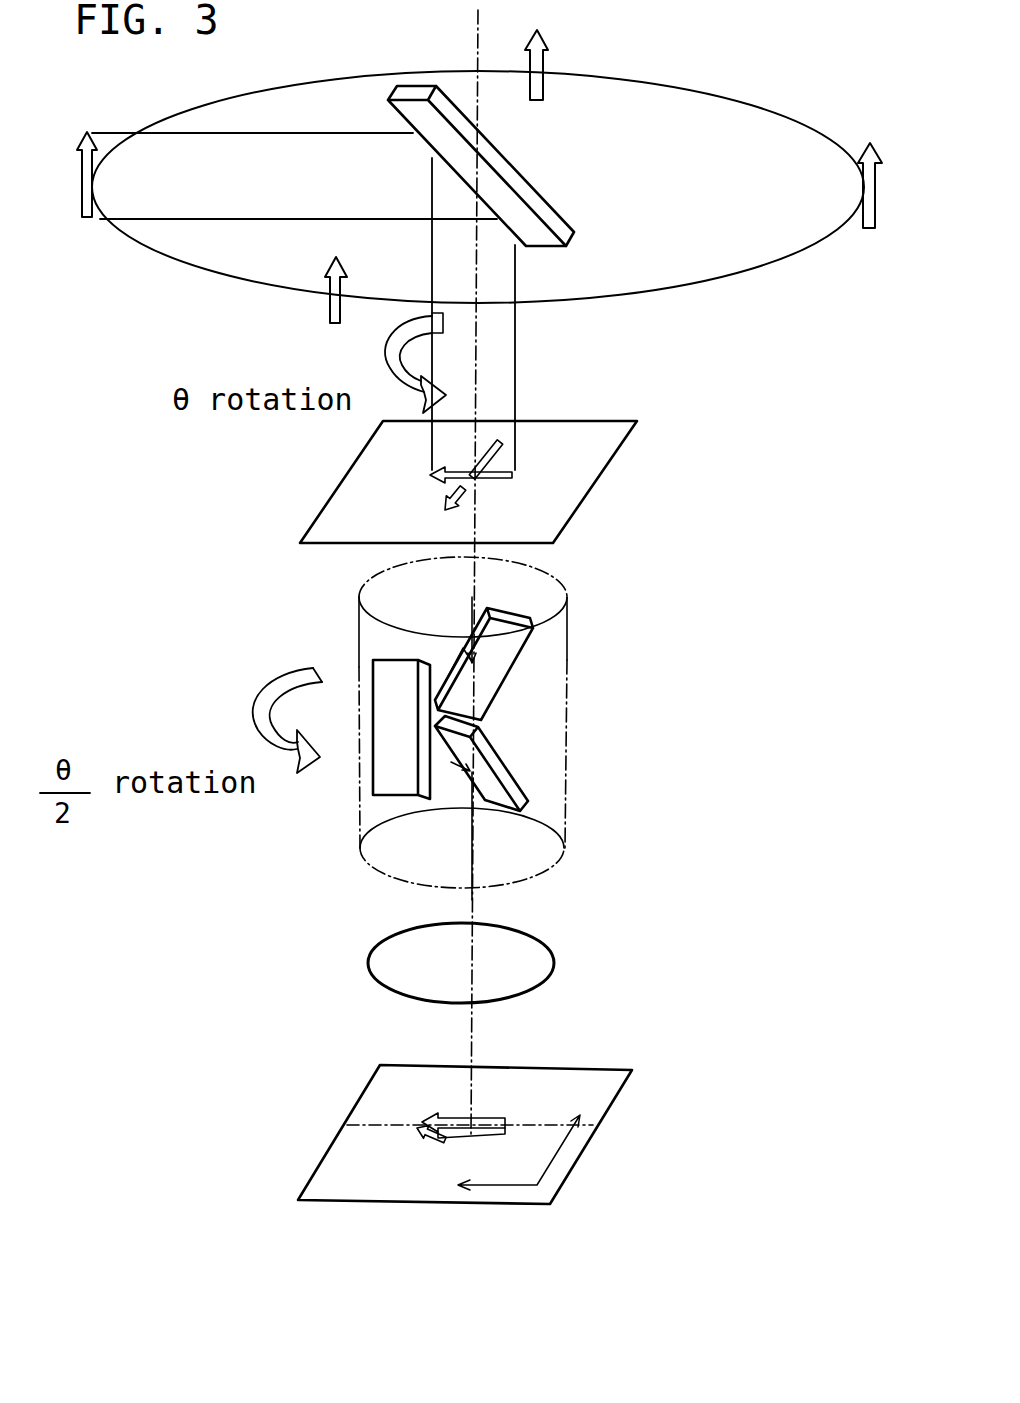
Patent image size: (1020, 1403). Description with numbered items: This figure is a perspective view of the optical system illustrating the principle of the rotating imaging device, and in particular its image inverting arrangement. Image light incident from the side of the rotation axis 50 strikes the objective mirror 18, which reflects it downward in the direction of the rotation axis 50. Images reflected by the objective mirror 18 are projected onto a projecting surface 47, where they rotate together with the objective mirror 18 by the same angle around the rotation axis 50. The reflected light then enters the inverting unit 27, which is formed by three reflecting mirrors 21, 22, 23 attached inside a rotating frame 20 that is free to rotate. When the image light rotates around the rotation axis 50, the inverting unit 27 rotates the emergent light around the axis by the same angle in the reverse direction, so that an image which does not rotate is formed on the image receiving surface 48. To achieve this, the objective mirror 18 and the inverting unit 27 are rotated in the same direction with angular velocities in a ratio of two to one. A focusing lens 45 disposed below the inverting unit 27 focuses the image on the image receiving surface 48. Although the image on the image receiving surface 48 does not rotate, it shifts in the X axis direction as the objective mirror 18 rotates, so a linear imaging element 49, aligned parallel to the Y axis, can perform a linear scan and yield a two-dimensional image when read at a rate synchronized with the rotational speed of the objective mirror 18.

The rotation axis 50 is at (477, 42).
The objective mirror 18 is at (500, 160).
The projecting surface 47 is at (578, 467).
The inverting unit 27 is at (628, 577).
The rotating frame 20 is at (566, 730).
The reflecting mirror 21 is at (495, 652).
The reflecting mirror 22 is at (373, 777).
The reflecting mirror 23 is at (510, 782).
The focusing lens 45 is at (532, 965).
The image receiving surface 48 is at (597, 1093).
The linear imaging element 49 is at (360, 1122).